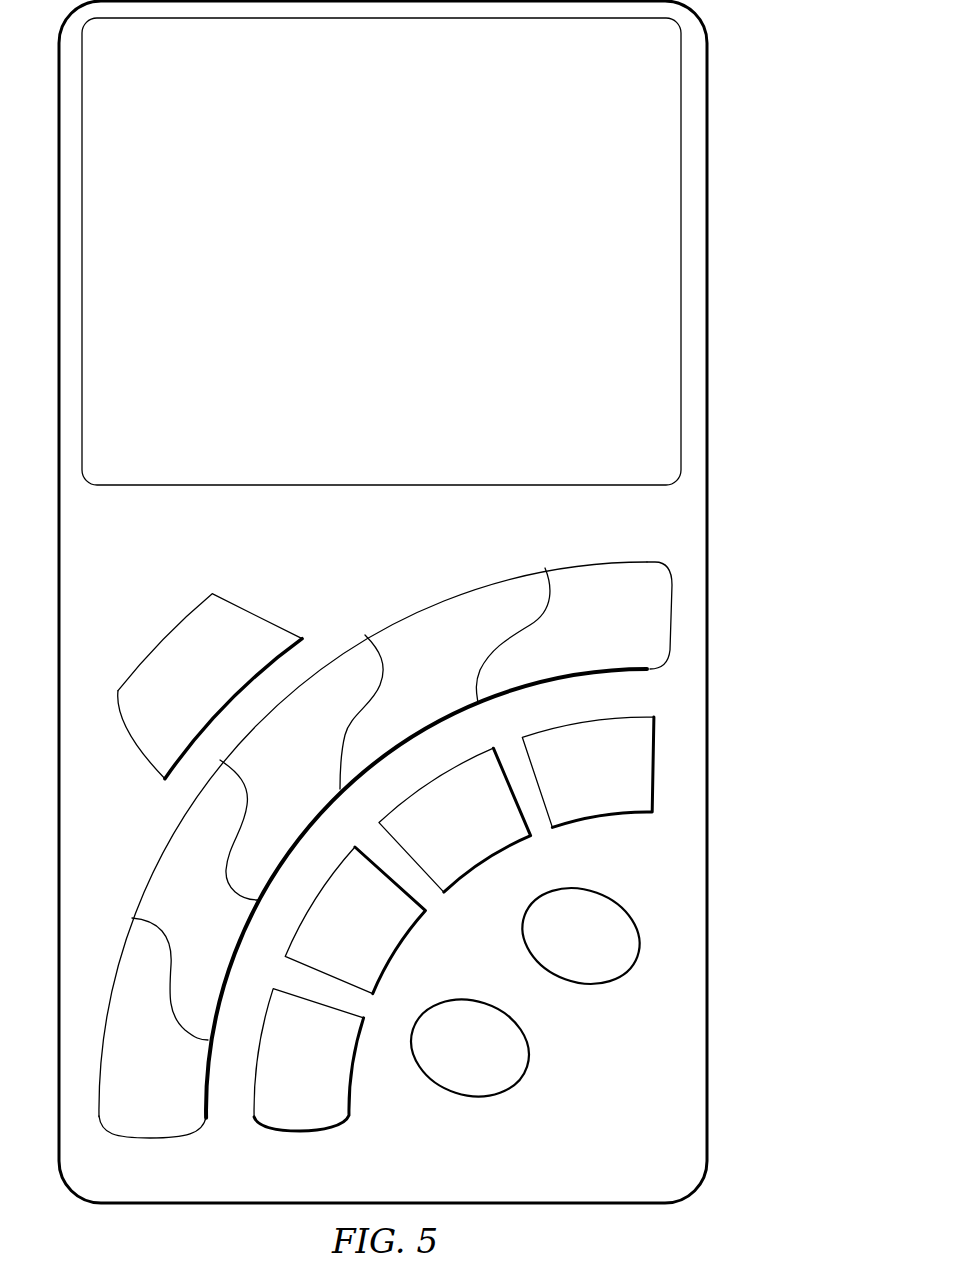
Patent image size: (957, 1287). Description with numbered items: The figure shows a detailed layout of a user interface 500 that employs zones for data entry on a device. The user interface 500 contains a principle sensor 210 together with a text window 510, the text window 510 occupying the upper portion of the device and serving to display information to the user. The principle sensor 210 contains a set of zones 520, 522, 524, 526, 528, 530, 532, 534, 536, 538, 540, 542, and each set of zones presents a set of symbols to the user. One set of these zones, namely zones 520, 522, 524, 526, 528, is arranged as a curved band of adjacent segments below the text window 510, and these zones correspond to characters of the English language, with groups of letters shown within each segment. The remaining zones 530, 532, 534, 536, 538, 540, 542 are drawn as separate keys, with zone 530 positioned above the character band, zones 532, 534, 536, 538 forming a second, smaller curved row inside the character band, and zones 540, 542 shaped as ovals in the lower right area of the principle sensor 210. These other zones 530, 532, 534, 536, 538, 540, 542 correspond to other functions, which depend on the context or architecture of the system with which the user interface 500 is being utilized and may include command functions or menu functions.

The user interface 500 is at (738, 187).
The principle sensor 210 is at (710, 1037).
The text window 510 is at (200, 487).
The zone 520 is at (139, 1130).
The zone 522 is at (165, 852).
The zone 524 is at (340, 655).
The zone 526 is at (445, 600).
The zone 528 is at (593, 565).
The zone 530 is at (175, 689).
The zone 532 is at (285, 1077).
The zone 534 is at (337, 938).
The zone 536 is at (438, 835).
The zone 538 is at (575, 783).
The zone 540 is at (450, 1061).
The zone 542 is at (560, 949).